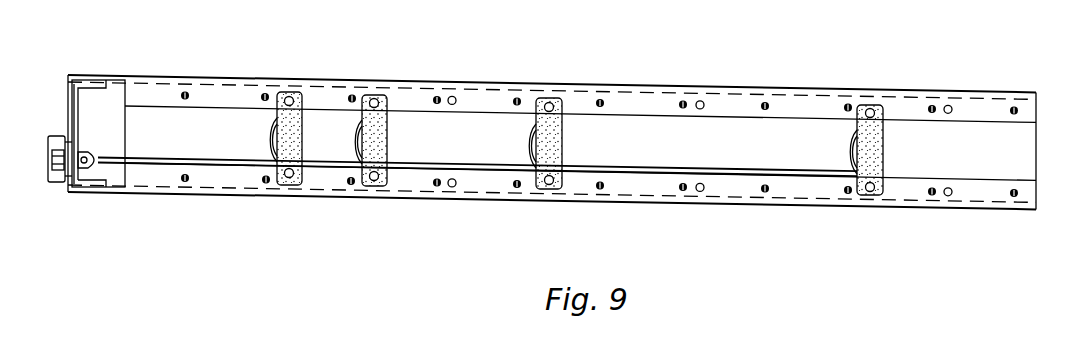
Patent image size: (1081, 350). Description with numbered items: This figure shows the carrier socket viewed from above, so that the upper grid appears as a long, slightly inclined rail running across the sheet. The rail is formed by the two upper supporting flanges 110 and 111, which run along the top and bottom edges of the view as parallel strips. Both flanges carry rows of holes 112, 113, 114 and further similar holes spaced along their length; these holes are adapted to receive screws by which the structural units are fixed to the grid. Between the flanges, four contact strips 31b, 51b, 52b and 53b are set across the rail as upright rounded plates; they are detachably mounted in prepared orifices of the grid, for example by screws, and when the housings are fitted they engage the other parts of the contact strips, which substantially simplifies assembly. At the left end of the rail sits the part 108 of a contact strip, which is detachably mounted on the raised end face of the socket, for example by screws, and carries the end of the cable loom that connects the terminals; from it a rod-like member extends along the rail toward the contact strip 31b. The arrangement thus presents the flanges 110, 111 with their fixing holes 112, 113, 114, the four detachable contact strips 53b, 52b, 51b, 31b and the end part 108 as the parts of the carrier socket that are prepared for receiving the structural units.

The upper supporting flange 110 is at (480, 95).
The upper supporting flange 111 is at (483, 188).
The part of contact strip 108 is at (58, 184).
The hole 112 is at (187, 183).
The hole 113 is at (270, 184).
The hole 114 is at (353, 185).
The contact strip 53b is at (293, 98).
The contact strip 52b is at (383, 97).
The contact strip 51b is at (558, 105).
The contact strip 31b is at (873, 112).